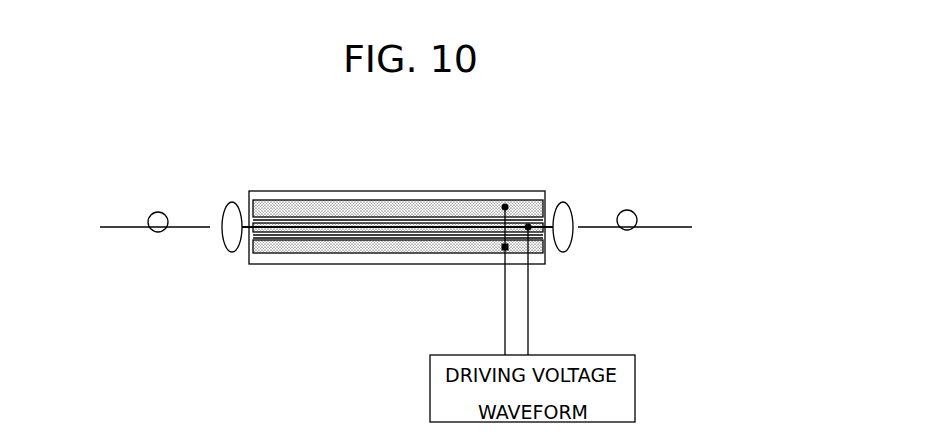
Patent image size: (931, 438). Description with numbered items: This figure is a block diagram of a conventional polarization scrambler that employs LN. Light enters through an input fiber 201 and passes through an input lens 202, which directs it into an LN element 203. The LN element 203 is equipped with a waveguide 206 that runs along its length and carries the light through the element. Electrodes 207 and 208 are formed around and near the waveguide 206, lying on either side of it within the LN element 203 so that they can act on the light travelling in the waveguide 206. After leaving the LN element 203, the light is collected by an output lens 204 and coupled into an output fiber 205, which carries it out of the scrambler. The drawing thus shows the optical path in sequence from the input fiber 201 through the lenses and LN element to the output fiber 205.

The input fiber 201 is at (121, 239).
The input lens 202 is at (221, 189).
The LN element 203 is at (381, 190).
The output lens 204 is at (559, 191).
The output fiber 205 is at (659, 236).
The waveguide 206 is at (459, 229).
The electrode 207 is at (302, 233).
The electrode 208 is at (386, 206).